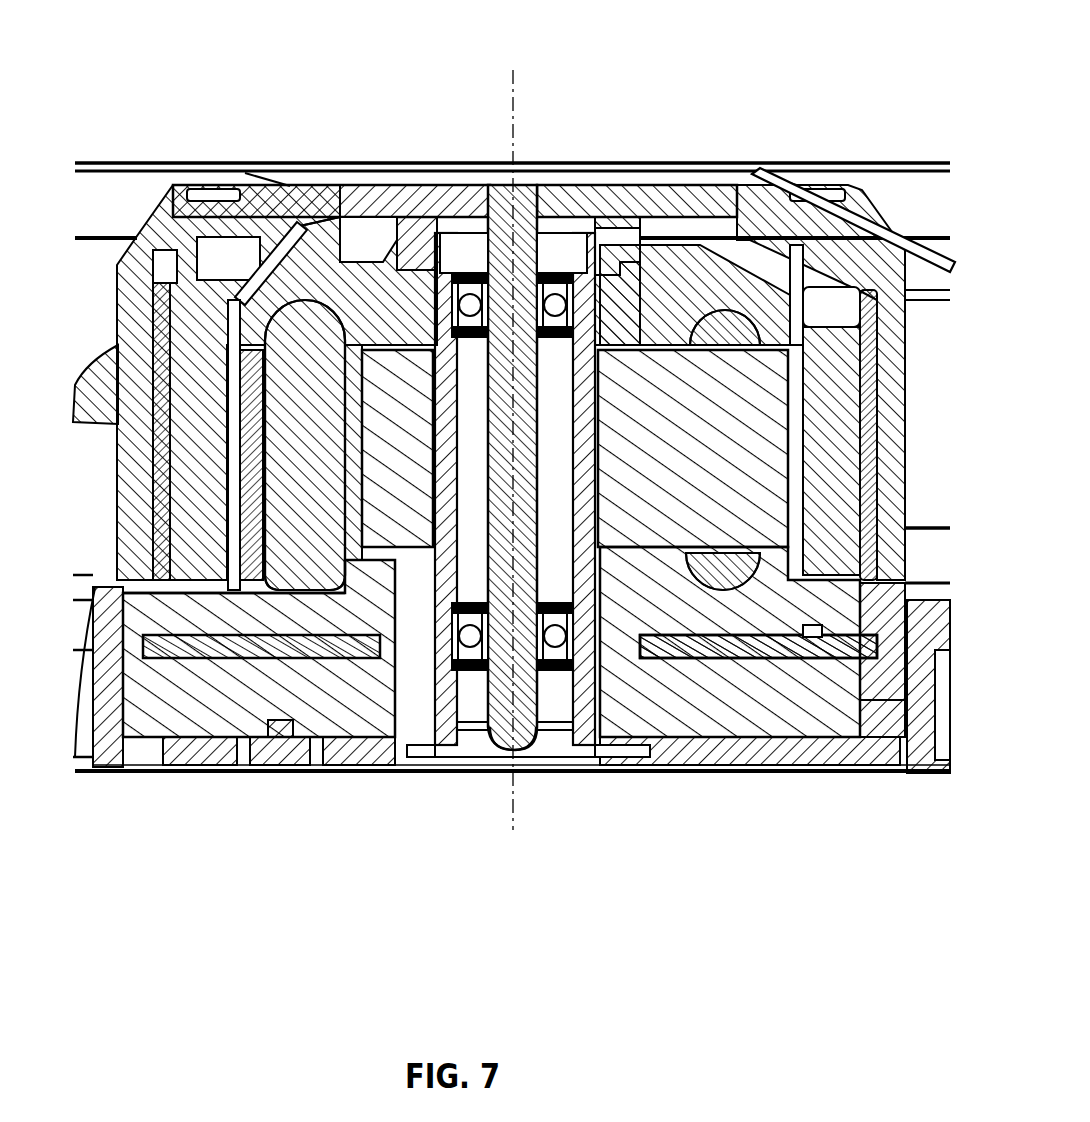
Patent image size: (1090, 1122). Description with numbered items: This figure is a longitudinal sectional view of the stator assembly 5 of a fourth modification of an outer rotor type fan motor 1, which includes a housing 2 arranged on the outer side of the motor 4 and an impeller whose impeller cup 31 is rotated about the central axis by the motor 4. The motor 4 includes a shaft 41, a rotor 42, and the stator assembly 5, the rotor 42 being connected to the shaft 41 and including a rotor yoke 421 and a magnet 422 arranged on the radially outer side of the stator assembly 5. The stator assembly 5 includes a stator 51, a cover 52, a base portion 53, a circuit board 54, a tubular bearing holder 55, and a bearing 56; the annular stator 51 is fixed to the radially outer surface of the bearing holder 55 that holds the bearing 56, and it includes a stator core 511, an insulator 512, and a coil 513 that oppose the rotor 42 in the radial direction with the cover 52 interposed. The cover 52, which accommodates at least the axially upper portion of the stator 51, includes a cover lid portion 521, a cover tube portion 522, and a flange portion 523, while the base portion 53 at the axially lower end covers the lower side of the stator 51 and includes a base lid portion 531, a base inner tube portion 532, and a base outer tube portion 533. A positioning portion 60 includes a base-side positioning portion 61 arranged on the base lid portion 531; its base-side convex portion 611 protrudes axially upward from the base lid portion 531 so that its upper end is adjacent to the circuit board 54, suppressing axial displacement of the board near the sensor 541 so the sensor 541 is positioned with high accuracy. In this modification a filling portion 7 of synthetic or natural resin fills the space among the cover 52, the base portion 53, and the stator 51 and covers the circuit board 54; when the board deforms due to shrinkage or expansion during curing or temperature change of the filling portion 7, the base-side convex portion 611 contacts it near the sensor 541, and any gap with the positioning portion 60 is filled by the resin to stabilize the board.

The fan motor 1 is at (275, 60).
The housing 2 is at (116, 162).
The motor 4 is at (462, 805).
The stator assembly 5 is at (492, 784).
The filling portion 7 is at (316, 697).
The impeller cup 31 is at (890, 208).
The shaft 41 is at (495, 195).
The rotor 42 is at (173, 580).
The stator 51 is at (760, 893).
The cover 52 is at (253, 263).
The base portion 53 is at (362, 777).
The circuit board 54 is at (278, 662).
The bearing holder 55 is at (573, 680).
The bearing 56 is at (420, 258).
The positioning portion 60 is at (888, 628).
The base-side positioning portion 61 is at (890, 705).
The rotor yoke 421 is at (143, 600).
The magnet 422 is at (207, 592).
The stator core 511 is at (673, 540).
The insulator 512 is at (647, 550).
The coil 513 is at (725, 590).
The cover lid portion 521 is at (262, 184).
The cover tube portion 522 is at (228, 330).
The flange portion 523 is at (115, 555).
The base lid portion 531 is at (823, 670).
The base inner tube portion 532 is at (613, 717).
The base outer tube portion 533 is at (925, 770).
The sensor 541 is at (786, 658).
The base-side convex portion 611 is at (868, 700).